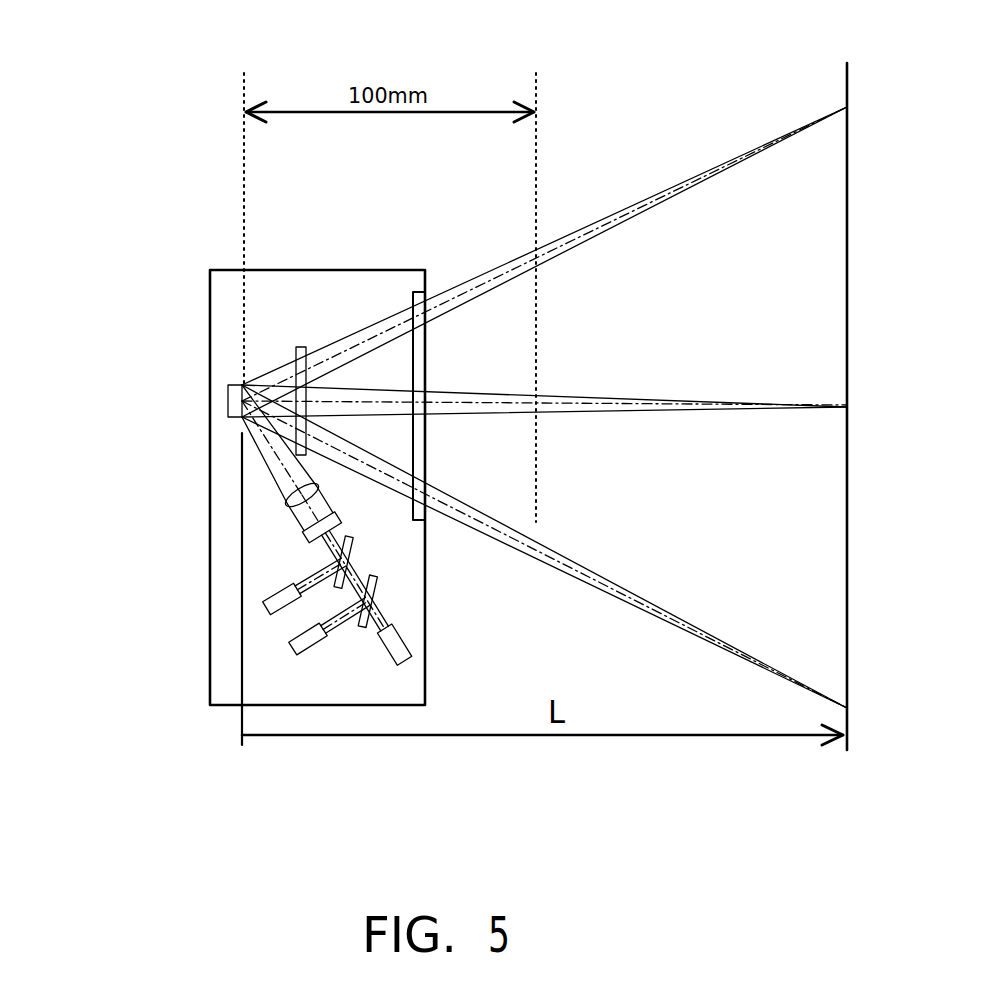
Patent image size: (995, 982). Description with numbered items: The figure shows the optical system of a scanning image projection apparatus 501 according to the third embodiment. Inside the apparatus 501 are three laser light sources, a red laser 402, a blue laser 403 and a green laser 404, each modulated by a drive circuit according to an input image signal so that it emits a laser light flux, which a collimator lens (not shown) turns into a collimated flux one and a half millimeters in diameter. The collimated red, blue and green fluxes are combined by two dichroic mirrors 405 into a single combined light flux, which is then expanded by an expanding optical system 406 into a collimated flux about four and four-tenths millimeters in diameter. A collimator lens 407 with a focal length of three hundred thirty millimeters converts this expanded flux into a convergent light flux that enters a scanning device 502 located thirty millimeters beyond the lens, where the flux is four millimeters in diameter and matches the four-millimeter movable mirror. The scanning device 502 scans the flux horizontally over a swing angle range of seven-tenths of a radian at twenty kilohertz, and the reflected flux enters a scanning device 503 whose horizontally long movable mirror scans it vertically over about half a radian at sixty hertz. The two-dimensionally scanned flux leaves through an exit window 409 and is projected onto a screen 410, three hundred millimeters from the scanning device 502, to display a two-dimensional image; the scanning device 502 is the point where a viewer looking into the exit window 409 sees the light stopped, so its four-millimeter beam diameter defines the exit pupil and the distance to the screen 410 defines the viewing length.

The scanning image projection apparatus 501 is at (187, 268).
The scanning device 502 is at (228, 418).
The scanning device 503 is at (296, 358).
The red laser 402 is at (263, 601).
The blue laser 403 is at (290, 646).
The green laser 404 is at (400, 667).
The dichroic mirror 405 is at (350, 552).
The expanding optical system 406 is at (302, 532).
The collimator lens 407 is at (285, 500).
The exit window 409 is at (420, 303).
The screen 410 is at (847, 83).